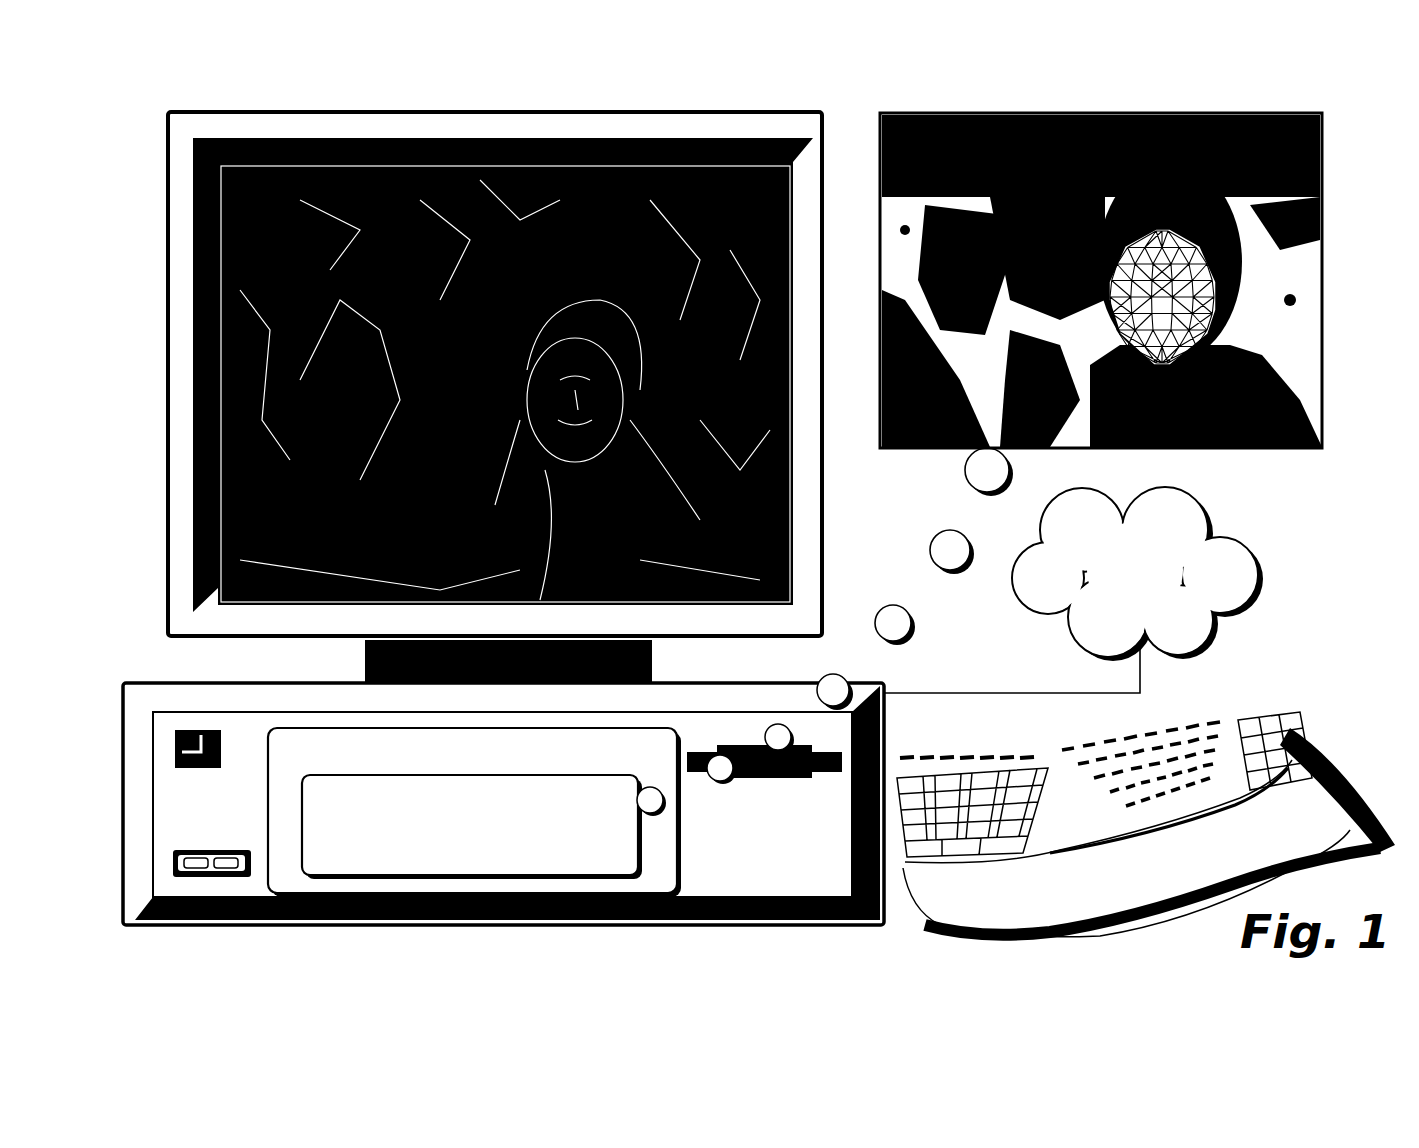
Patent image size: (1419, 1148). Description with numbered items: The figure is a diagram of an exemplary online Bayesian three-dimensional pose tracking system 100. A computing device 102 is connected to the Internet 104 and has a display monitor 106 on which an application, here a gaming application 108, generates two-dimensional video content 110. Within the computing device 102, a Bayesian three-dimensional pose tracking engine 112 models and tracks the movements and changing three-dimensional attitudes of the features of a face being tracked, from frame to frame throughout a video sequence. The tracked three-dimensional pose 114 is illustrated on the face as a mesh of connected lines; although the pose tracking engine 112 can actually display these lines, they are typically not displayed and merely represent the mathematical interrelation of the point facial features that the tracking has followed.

The online Bayesian 3D pose tracking system 100 is at (146, 81).
The computing device 102 is at (168, 683).
The Internet 104 is at (1069, 570).
The display monitor 106 is at (168, 187).
The gaming application 108 is at (474, 812).
The 2D video content 110 is at (236, 322).
The Bayesian 3D pose tracking engine 112 is at (472, 827).
The tracked 3D pose 114 is at (1212, 272).